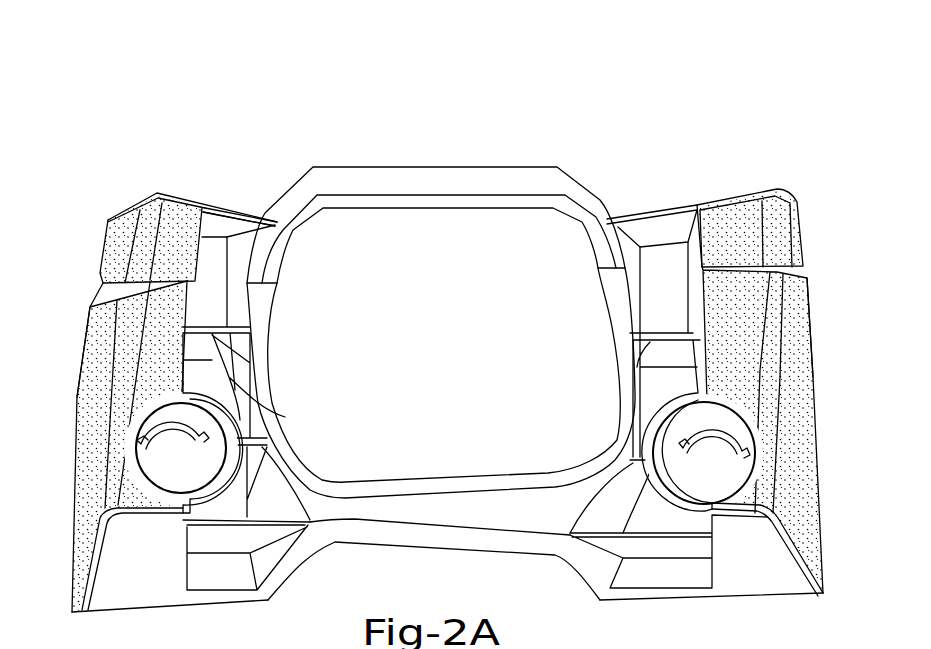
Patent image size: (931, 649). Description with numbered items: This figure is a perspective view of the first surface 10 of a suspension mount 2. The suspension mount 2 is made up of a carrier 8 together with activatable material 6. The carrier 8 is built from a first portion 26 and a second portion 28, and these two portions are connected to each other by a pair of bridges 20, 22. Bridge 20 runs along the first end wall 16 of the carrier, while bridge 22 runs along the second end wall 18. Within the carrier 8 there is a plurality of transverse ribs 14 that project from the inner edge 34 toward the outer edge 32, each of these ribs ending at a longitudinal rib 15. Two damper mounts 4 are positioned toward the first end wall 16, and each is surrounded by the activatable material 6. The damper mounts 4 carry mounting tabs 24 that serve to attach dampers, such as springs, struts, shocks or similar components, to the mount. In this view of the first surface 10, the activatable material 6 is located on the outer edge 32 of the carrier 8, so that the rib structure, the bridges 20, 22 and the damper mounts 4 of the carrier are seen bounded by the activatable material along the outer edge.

The suspension mount 2 is at (613, 68).
The first surface 10 is at (595, 142).
The carrier 8 is at (352, 147).
The bridge 22 is at (433, 203).
The second end wall 18 is at (173, 203).
The first portion 26 is at (103, 203).
The second portion 28 is at (828, 198).
The longitudinal rib 15 is at (624, 228).
The inner edge 34 is at (605, 298).
The transverse ribs 14 is at (262, 343).
The damper mounts 4 is at (175, 443).
The mounting tabs 24 is at (738, 455).
The activatable material 6 is at (113, 462).
The outer edge 32 is at (88, 517).
The first end wall 16 is at (120, 563).
The bridge 20 is at (470, 512).